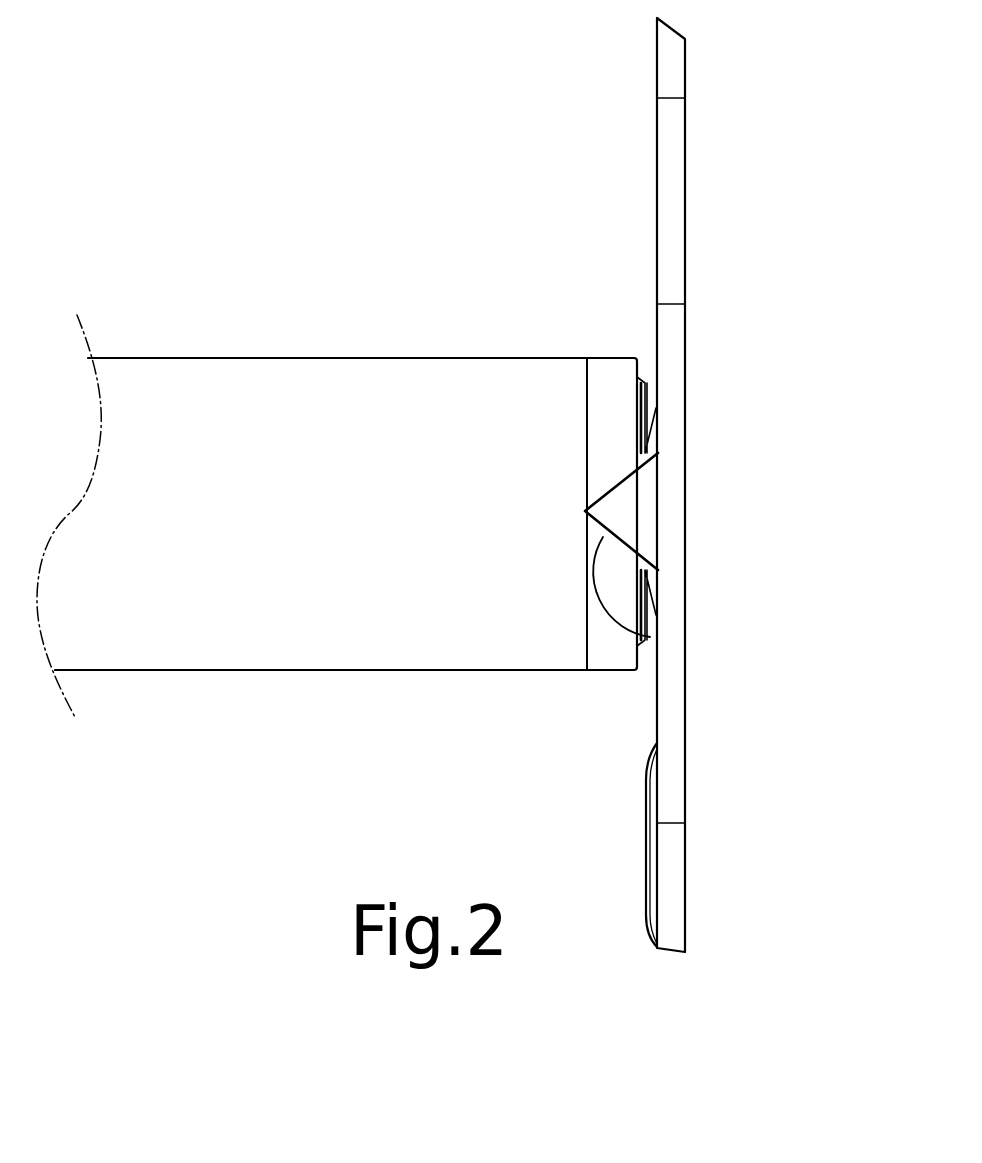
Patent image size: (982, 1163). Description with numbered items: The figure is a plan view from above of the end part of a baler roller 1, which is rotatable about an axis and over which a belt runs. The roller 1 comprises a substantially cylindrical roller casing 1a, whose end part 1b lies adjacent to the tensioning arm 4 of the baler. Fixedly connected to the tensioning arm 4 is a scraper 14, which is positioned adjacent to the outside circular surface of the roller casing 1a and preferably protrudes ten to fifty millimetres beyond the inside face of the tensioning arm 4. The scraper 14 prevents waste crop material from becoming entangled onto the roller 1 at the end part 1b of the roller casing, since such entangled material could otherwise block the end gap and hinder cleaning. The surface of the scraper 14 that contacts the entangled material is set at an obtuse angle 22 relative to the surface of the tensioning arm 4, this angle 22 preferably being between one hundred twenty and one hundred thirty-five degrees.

The roller 1 is at (346, 539).
The roller casing 1a is at (314, 392).
The end part of the roller casing 1b is at (622, 385).
The tensioning arm 4 is at (672, 194).
The scraper 14 is at (620, 510).
The obtuse angle 22 is at (650, 637).